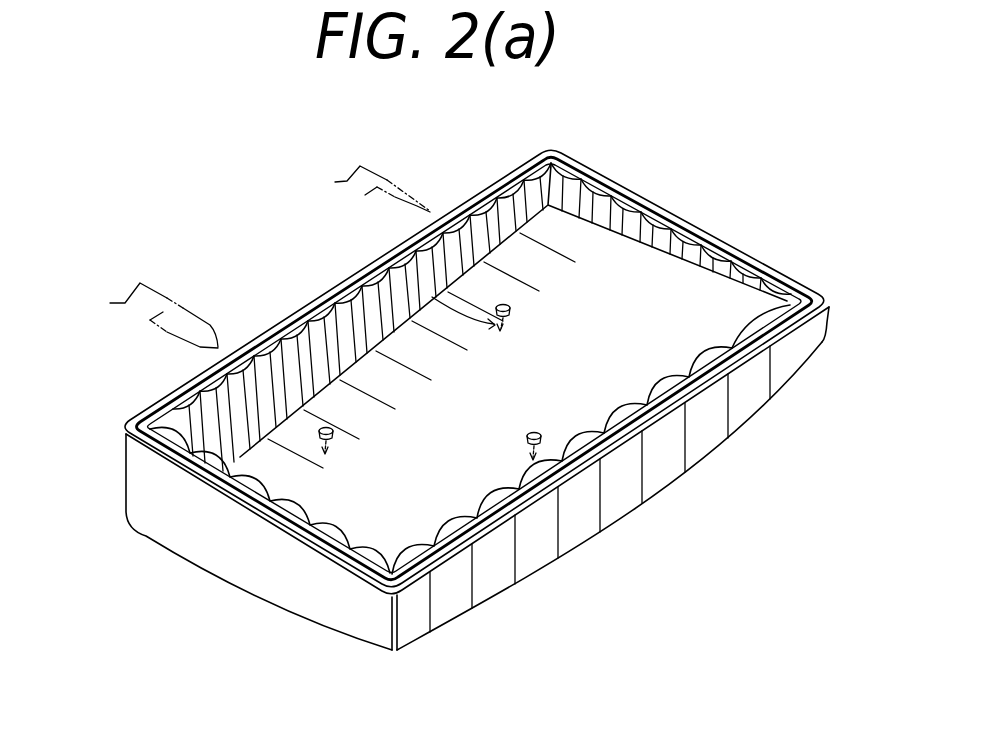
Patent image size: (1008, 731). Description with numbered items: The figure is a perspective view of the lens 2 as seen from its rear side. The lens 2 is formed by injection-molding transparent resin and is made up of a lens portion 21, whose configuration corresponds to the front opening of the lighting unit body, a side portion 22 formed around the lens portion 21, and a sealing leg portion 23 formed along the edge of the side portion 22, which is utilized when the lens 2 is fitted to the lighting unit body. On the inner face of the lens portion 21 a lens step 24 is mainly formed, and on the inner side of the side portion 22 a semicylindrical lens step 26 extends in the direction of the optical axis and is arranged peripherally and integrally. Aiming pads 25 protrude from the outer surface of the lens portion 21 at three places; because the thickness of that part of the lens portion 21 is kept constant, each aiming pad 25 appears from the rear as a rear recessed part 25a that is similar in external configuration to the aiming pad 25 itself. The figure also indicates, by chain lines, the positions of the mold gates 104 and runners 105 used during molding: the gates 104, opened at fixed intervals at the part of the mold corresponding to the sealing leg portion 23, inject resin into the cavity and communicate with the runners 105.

The lens 2 is at (556, 565).
The lens portion 21 is at (383, 530).
The side portion 22 is at (430, 637).
The sealing leg portion 23 is at (814, 291).
The lens step 24 is at (282, 458).
The aiming pad 25 is at (388, 250).
The rear recessed part 25a is at (510, 311).
The semicylindrical lens step 26 is at (300, 333).
The gate 104 is at (432, 213).
The runner 105 is at (370, 161).